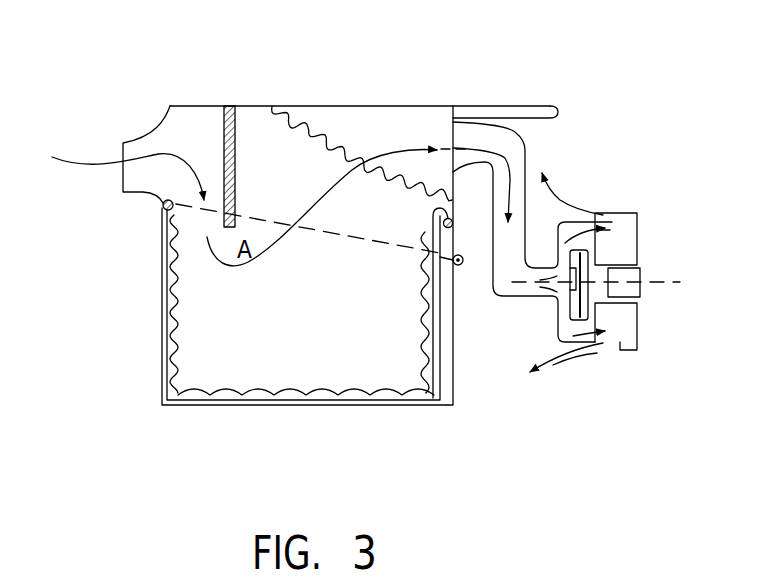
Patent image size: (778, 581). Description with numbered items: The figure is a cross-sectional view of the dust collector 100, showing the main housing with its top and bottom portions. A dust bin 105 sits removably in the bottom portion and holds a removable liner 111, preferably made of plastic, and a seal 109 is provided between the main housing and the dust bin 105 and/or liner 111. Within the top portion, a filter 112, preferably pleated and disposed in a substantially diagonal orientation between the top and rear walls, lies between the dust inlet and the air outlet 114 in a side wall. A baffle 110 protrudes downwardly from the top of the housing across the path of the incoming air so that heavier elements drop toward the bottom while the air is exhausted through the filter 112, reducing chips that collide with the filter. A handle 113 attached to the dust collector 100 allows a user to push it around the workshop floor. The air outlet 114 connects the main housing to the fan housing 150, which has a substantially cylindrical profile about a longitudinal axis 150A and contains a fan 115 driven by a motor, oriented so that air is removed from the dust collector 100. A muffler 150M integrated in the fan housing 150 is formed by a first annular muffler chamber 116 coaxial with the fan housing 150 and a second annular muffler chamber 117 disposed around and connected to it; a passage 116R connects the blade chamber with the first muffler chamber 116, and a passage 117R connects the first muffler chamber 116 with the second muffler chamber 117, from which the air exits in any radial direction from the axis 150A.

The dust collector 100 is at (465, 70).
The dust bin 105 is at (277, 406).
The seal 109 is at (163, 208).
The baffle 110 is at (222, 127).
The liner 111 is at (327, 392).
The filter 112 is at (317, 130).
The handle 113 is at (543, 105).
The air outlet 114 is at (520, 160).
The fan 115 is at (578, 308).
The first annular muffler chamber 116 is at (633, 350).
The passage 116R is at (598, 217).
The second annular muffler chamber 117 is at (595, 350).
The passage 117R is at (610, 216).
The fan housing 150 is at (661, 242).
The longitudinal axis 150A is at (617, 290).
The muffler 150M is at (613, 352).